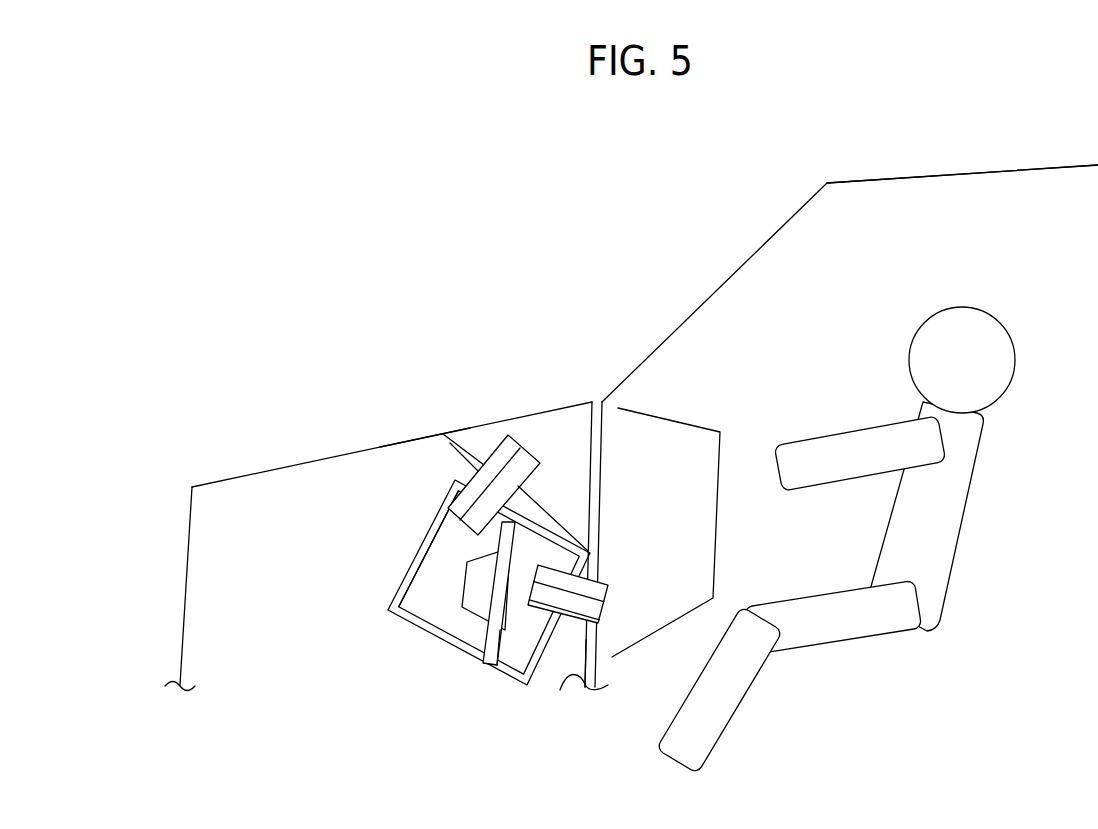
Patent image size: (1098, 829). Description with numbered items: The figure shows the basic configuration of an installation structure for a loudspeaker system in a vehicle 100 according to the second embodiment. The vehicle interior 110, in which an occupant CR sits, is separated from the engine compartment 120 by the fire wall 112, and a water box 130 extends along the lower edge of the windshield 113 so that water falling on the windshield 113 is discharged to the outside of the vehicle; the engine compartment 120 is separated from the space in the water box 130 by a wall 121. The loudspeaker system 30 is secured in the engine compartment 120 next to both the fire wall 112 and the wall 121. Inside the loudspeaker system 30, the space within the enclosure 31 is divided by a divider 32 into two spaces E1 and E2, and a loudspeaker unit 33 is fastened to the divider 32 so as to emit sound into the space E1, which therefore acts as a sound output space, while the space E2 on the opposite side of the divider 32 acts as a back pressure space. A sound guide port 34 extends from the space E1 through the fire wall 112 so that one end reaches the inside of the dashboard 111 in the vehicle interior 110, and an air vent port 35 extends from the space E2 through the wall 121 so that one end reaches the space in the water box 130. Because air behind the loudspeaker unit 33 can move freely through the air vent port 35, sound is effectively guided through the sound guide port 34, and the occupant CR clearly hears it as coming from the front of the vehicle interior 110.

The loudspeaker system 30 is at (479, 564).
The enclosure 31 is at (405, 625).
The divider 32 is at (487, 633).
The loudspeaker unit 33 is at (475, 590).
The sound guide port 34 is at (597, 607).
The air vent port 35 is at (485, 440).
The vehicle 100 is at (1033, 163).
The vehicle interior 110 is at (878, 196).
The dashboard 111 is at (700, 432).
The fire wall 112 is at (567, 678).
The windshield 113 is at (763, 243).
The engine compartment 120 is at (298, 488).
The wall 121 is at (460, 444).
The water box 130 is at (547, 413).
The space E1 is at (508, 653).
The space E2 is at (443, 553).
The occupant CR is at (955, 517).